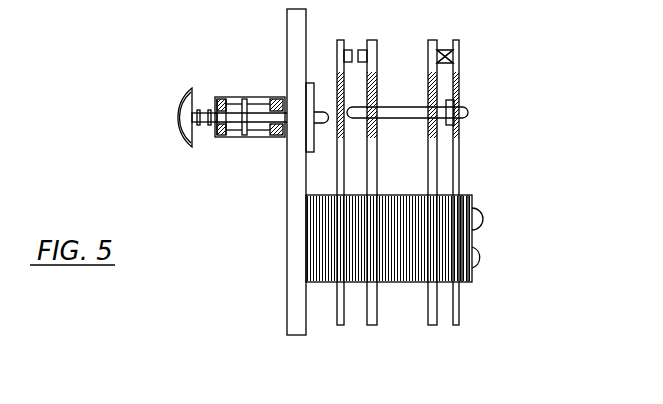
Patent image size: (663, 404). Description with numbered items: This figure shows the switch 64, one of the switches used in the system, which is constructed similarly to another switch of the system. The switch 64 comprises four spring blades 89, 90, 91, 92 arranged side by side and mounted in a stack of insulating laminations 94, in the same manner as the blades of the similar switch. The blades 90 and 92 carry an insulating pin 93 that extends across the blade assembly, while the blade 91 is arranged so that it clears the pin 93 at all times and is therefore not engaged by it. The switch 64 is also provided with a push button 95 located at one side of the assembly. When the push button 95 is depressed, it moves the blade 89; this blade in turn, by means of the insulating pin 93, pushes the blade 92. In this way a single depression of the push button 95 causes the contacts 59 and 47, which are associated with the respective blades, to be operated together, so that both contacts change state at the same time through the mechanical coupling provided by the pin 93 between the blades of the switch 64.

The contact 47 is at (446, 45).
The contact 59 is at (352, 46).
The switch 64 is at (268, 203).
The spring blade 89 is at (340, 325).
The spring blade 90 is at (372, 325).
The spring blade 91 is at (432, 325).
The spring blade 92 is at (458, 325).
The insulating pin 93 is at (403, 118).
The stack of insulating laminations 94 is at (473, 200).
The push button 95 is at (180, 100).